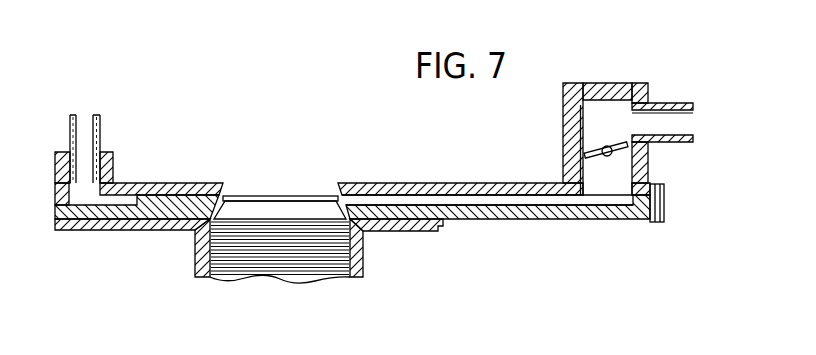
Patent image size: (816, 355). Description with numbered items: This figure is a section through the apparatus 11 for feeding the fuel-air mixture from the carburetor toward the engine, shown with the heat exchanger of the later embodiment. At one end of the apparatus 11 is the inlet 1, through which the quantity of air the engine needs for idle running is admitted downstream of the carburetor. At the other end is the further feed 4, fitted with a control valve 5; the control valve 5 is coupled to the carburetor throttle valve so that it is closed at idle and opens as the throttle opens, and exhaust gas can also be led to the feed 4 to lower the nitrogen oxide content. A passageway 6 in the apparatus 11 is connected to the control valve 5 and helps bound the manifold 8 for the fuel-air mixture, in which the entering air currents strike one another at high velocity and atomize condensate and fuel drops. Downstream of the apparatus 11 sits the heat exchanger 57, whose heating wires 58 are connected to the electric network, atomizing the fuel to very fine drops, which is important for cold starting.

The inlet 1 is at (89, 128).
The feed 4 is at (669, 120).
The control valve 5 is at (585, 143).
The passageway 6 is at (473, 204).
The manifold 8 is at (259, 207).
The apparatus for feeding the fuel-air mixture 11 is at (416, 181).
The heat exchanger 57 is at (199, 256).
The heating wires 58 is at (330, 255).